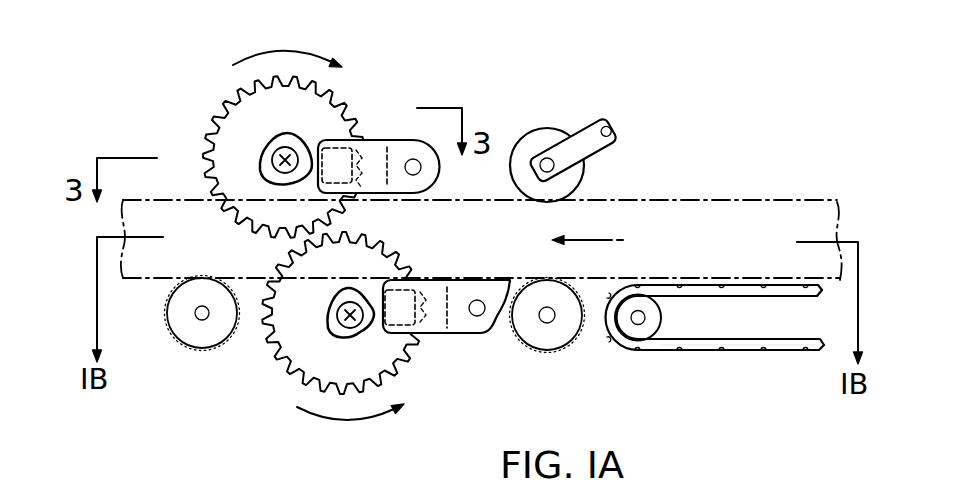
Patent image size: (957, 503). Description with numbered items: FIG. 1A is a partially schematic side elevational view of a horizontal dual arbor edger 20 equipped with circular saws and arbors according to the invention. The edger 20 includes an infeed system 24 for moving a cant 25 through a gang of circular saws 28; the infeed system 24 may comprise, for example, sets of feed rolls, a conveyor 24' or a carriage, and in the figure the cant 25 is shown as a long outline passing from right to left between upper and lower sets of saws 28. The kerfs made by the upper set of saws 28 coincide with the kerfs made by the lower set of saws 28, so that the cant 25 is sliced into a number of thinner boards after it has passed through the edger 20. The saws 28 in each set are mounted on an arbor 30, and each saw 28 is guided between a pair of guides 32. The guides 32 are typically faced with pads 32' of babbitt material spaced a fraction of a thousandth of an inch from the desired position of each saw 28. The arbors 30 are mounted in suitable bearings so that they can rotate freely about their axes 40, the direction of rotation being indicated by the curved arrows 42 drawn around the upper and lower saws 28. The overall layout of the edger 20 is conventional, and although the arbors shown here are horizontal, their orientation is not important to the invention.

The horizontal dual arbor edger 20 is at (514, 81).
The infeed system 24 is at (715, 341).
The conveyor 24' is at (737, 383).
The cant 25 is at (696, 200).
The circular saws 28 is at (217, 96).
The arbor 30 is at (250, 141).
The guides 32 is at (391, 228).
The pads 32' is at (446, 278).
The axes 40 is at (285, 150).
The arrows 42 is at (268, 47).